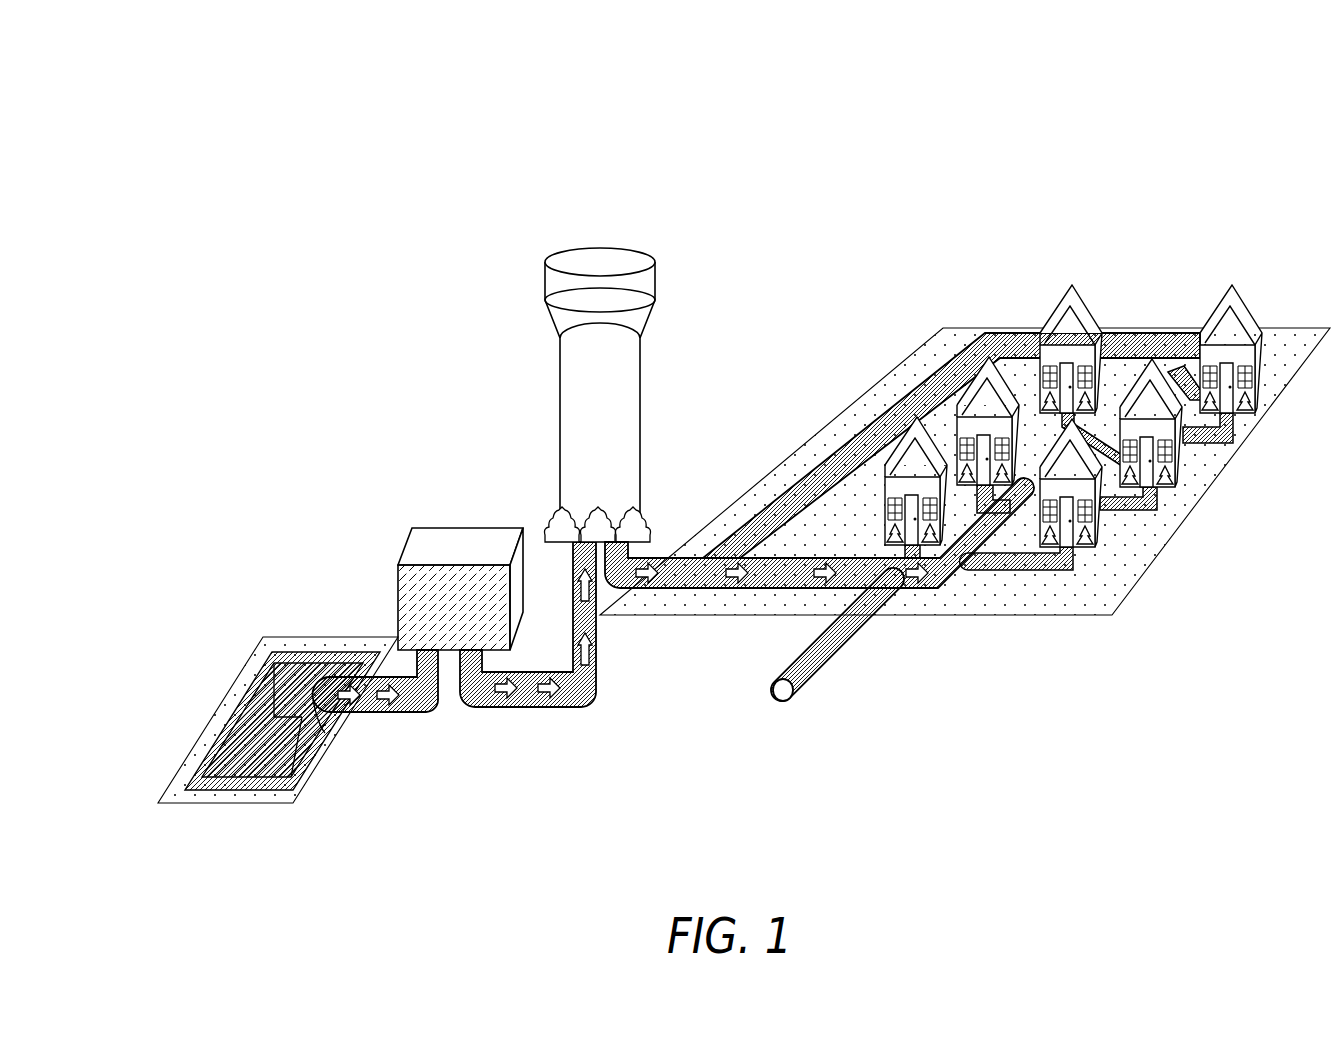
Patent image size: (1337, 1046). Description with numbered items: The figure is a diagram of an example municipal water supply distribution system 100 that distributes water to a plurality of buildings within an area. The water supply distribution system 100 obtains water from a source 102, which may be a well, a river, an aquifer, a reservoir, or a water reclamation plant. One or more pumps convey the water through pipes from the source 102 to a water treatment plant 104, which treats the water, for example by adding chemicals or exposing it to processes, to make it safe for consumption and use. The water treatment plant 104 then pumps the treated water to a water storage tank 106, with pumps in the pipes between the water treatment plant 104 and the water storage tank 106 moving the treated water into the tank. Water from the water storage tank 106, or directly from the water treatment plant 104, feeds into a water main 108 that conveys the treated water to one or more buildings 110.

The municipal water supply distribution system 100 is at (156, 152).
The source 102 is at (272, 650).
The water treatment plant 104 is at (398, 565).
The water storage tank 106 is at (640, 263).
The water main 108 is at (798, 495).
The buildings 110 is at (1067, 295).